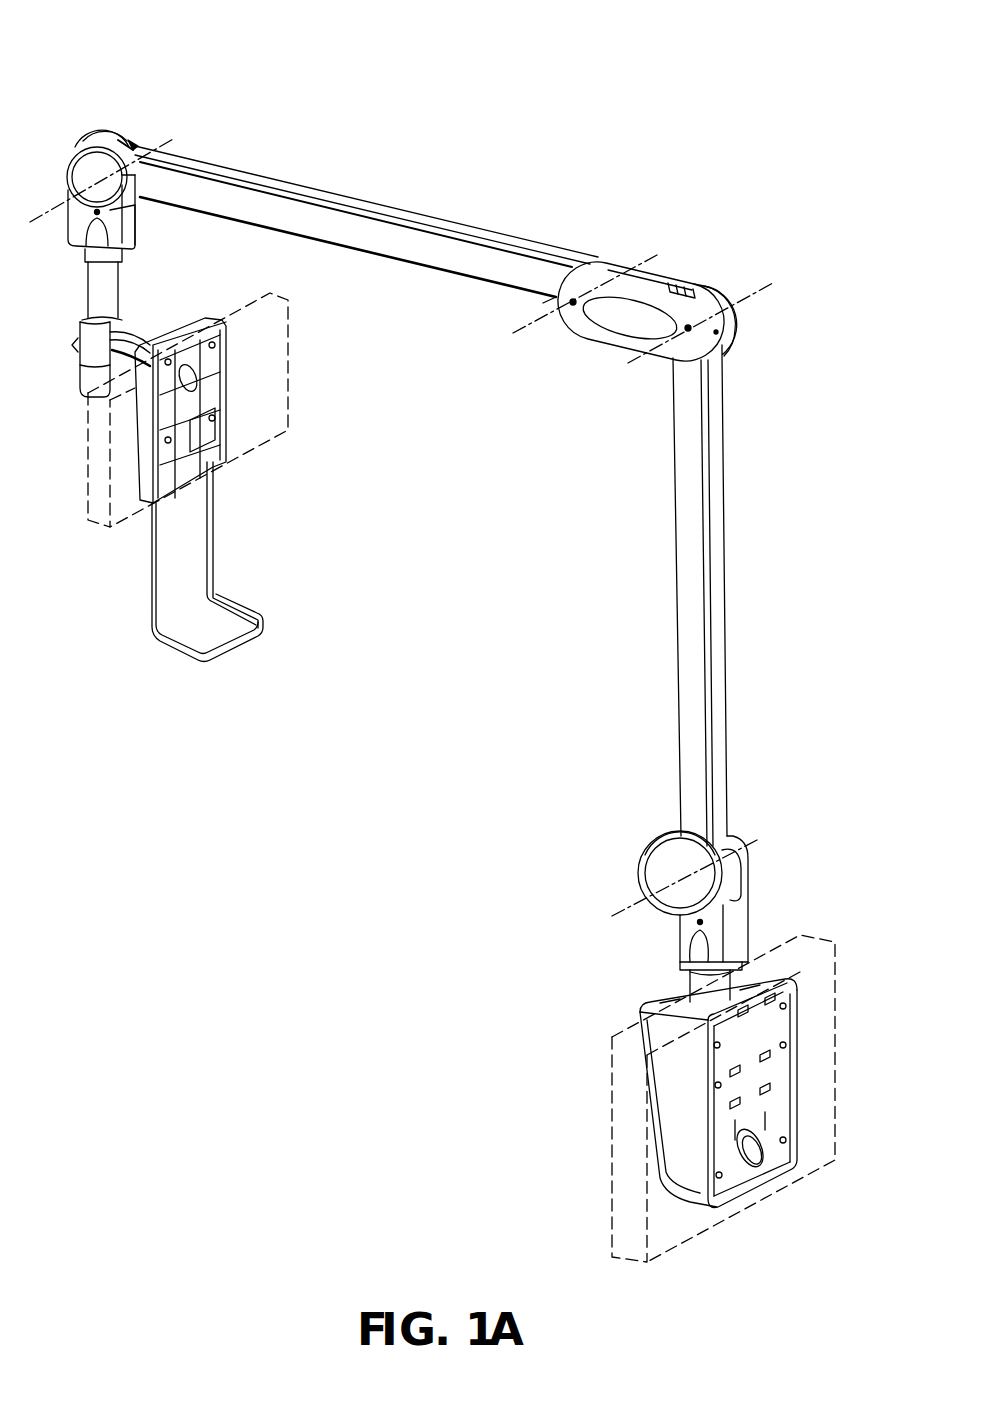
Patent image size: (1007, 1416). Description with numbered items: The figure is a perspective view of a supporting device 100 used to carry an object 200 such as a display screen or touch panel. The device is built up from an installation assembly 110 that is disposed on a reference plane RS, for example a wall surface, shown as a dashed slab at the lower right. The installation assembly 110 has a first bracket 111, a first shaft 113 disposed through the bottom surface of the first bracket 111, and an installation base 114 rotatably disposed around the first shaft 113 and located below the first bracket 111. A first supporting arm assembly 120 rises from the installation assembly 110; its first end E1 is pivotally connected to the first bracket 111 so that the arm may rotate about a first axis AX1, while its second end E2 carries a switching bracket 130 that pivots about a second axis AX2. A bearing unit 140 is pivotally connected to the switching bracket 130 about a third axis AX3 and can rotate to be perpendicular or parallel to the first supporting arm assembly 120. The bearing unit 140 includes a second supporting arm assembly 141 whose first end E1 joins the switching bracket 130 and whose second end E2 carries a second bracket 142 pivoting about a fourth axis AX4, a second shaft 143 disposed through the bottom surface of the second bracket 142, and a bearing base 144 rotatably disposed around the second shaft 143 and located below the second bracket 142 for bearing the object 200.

The supporting device 100 is at (882, 1266).
The installation assembly 110 is at (520, 985).
The first bracket 111 is at (705, 988).
The first shaft 113 is at (700, 1000).
The installation base 114 is at (690, 1015).
The first supporting arm assembly 120 is at (692, 528).
The switching bracket 130 is at (652, 318).
The bearing unit 140 is at (345, 64).
The second supporting arm assembly 141 is at (318, 222).
The second bracket 142 is at (140, 188).
The second shaft 143 is at (105, 290).
The bearing base 144 is at (118, 352).
The object 200 is at (105, 520).
The first axis AX1 is at (602, 912).
The second axis AX2 is at (641, 367).
The third axis AX3 is at (527, 346).
The fourth axis AX4 is at (45, 233).
The first end E1 is at (558, 284).
The second end E2 is at (133, 150).
The reference plane RS is at (815, 990).